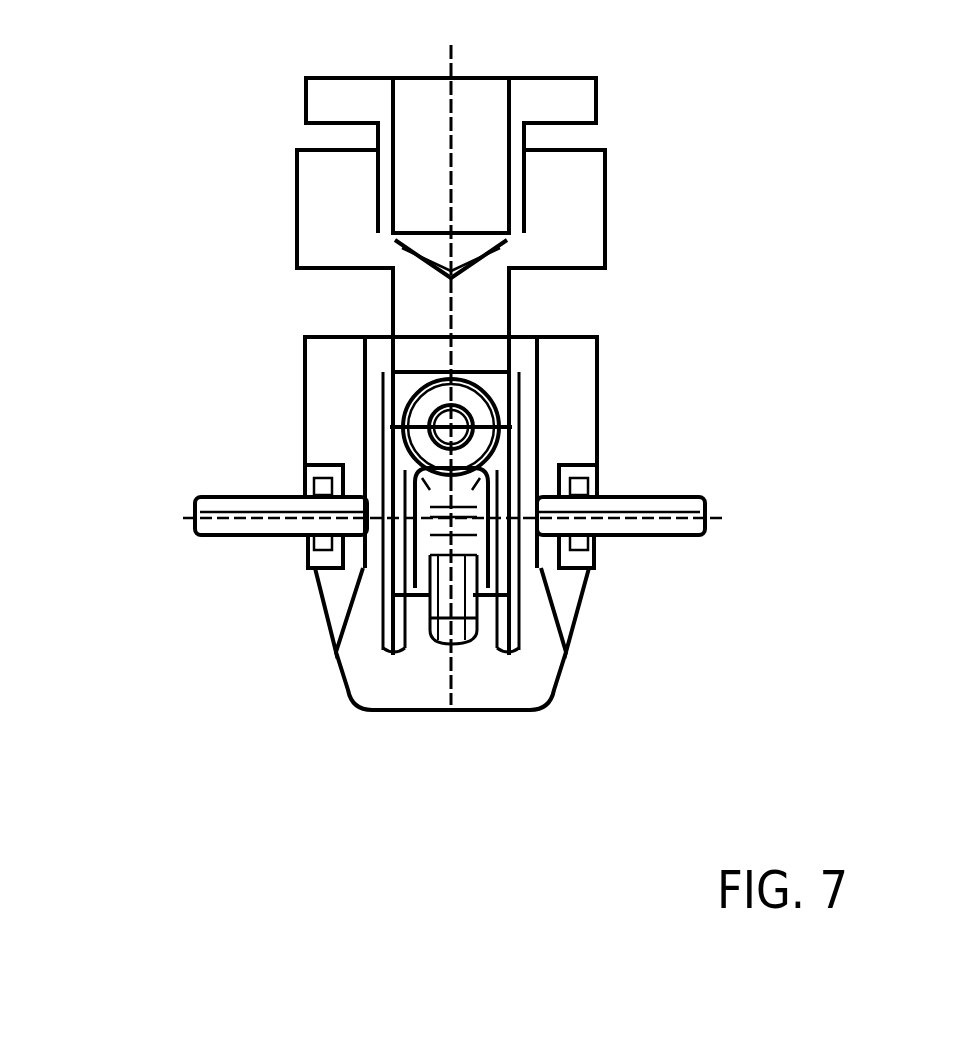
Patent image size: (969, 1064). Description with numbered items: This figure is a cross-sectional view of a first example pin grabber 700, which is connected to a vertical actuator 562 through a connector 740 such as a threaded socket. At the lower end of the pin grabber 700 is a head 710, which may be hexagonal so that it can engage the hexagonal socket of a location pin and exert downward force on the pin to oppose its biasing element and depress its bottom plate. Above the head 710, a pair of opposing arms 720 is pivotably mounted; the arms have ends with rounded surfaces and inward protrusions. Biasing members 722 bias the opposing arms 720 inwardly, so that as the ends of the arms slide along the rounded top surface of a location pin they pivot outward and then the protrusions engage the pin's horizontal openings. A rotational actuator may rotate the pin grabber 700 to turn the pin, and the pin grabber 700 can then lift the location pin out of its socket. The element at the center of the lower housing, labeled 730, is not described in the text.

The pin grabber 700 is at (191, 72).
The vertical actuator 562 is at (310, 105).
The connector 740 is at (352, 205).
The pivot bearing 730 is at (418, 403).
The biasing members 722 is at (242, 535).
The opposing arms 720 is at (385, 645).
The head 710 is at (448, 628).